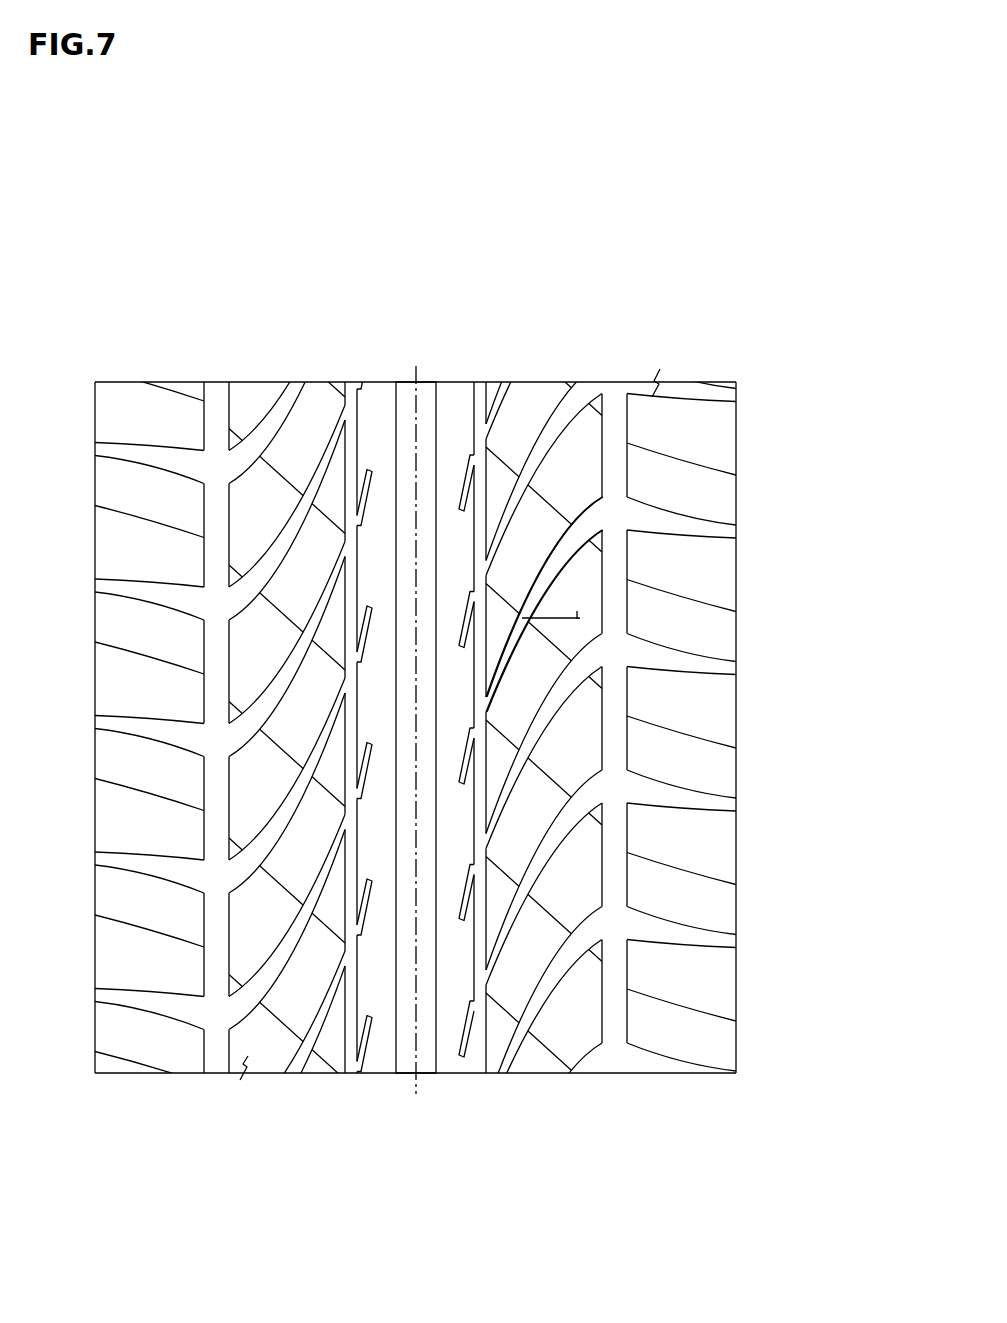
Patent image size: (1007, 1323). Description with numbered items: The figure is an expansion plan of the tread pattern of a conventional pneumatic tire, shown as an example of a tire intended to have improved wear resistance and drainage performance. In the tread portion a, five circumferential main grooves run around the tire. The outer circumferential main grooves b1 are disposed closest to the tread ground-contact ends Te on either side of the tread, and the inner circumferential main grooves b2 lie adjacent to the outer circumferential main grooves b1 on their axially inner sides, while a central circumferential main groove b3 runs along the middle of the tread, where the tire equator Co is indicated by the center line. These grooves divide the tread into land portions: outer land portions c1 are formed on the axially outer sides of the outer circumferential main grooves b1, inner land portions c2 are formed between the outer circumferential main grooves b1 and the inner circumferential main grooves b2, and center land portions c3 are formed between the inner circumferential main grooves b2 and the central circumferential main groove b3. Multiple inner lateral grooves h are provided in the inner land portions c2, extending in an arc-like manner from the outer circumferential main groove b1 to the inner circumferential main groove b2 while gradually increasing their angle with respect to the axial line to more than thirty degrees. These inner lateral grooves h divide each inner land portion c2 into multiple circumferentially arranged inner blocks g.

The tread portion a is at (692, 315).
The tread ground-contact end Te is at (95, 422).
The tire equator Co is at (413, 719).
The outer circumferential main groove b1 is at (215, 405).
The inner circumferential main groove b2 is at (349, 410).
The central circumferential main groove b3 is at (407, 420).
The outer land portion c1 is at (162, 1092).
The inner land portion c2 is at (261, 1092).
The center land portion c3 is at (381, 1057).
The inner block g is at (583, 454).
The inner lateral groove h is at (575, 545).